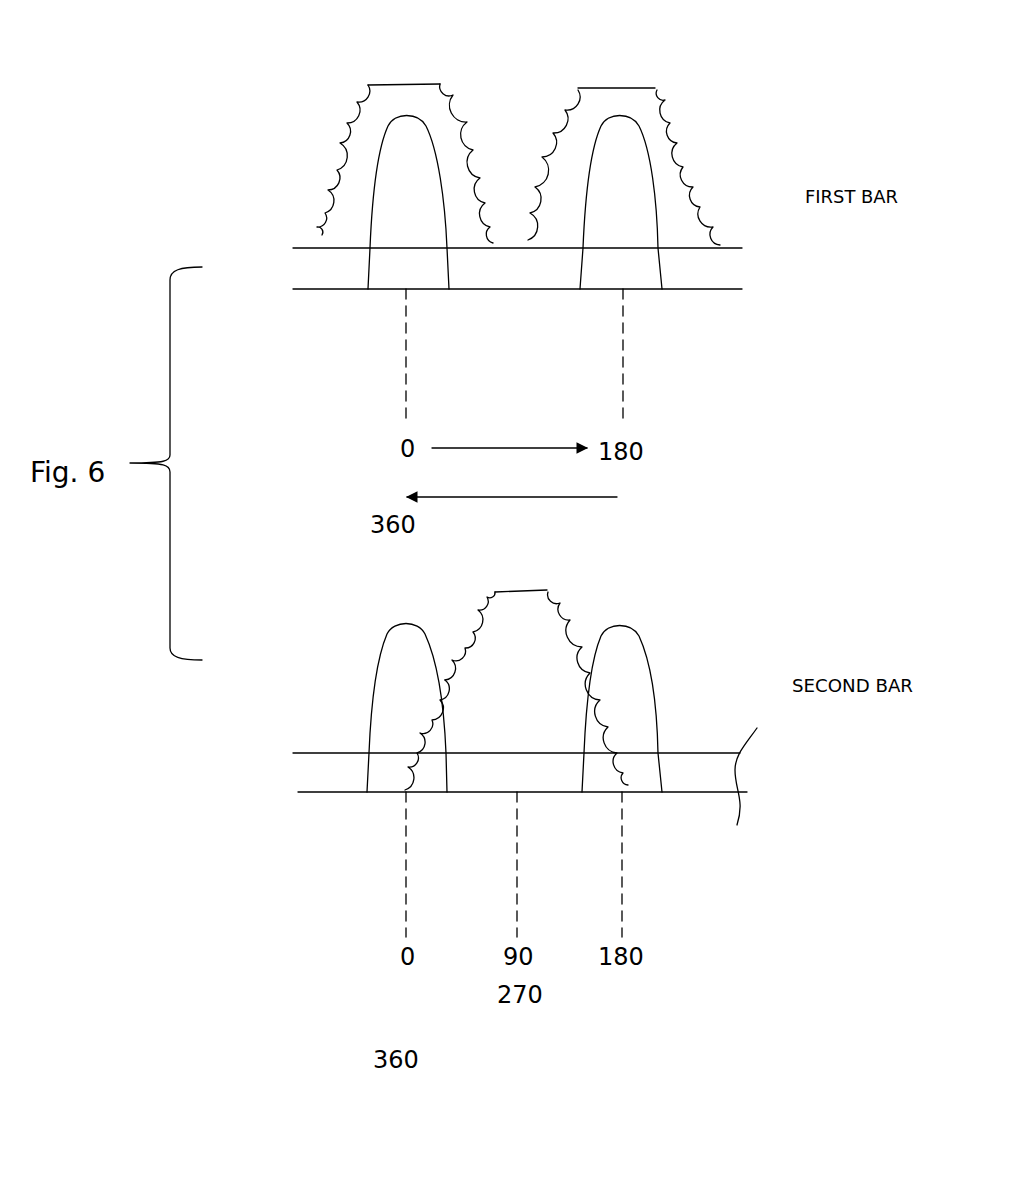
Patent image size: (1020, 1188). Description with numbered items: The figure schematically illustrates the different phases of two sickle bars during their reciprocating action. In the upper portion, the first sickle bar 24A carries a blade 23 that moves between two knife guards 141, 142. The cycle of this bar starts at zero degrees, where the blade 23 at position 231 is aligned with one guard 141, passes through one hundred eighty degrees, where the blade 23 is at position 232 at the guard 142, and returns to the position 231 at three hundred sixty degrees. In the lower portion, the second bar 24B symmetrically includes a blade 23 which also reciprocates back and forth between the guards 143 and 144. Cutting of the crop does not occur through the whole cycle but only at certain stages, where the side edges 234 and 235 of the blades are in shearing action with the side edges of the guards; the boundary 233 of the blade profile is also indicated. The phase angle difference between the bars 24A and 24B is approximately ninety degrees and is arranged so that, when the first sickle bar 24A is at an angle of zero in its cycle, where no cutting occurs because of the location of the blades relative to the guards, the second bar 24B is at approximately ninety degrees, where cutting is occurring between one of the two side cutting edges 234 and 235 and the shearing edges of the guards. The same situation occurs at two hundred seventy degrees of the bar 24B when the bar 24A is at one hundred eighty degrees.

The blade 23 is at (678, 122).
The first sickle bar 24A is at (700, 272).
The second sickle bar 24B is at (718, 775).
The guard 141 is at (407, 157).
The guard 142 is at (628, 163).
The guard 143 is at (387, 680).
The guard 144 is at (637, 695).
The blade position 231 is at (370, 145).
The blade position 232 is at (670, 182).
The third boundary segment 233 is at (485, 640).
The side edge of blade 234 is at (445, 680).
The side edge of blade 235 is at (580, 655).